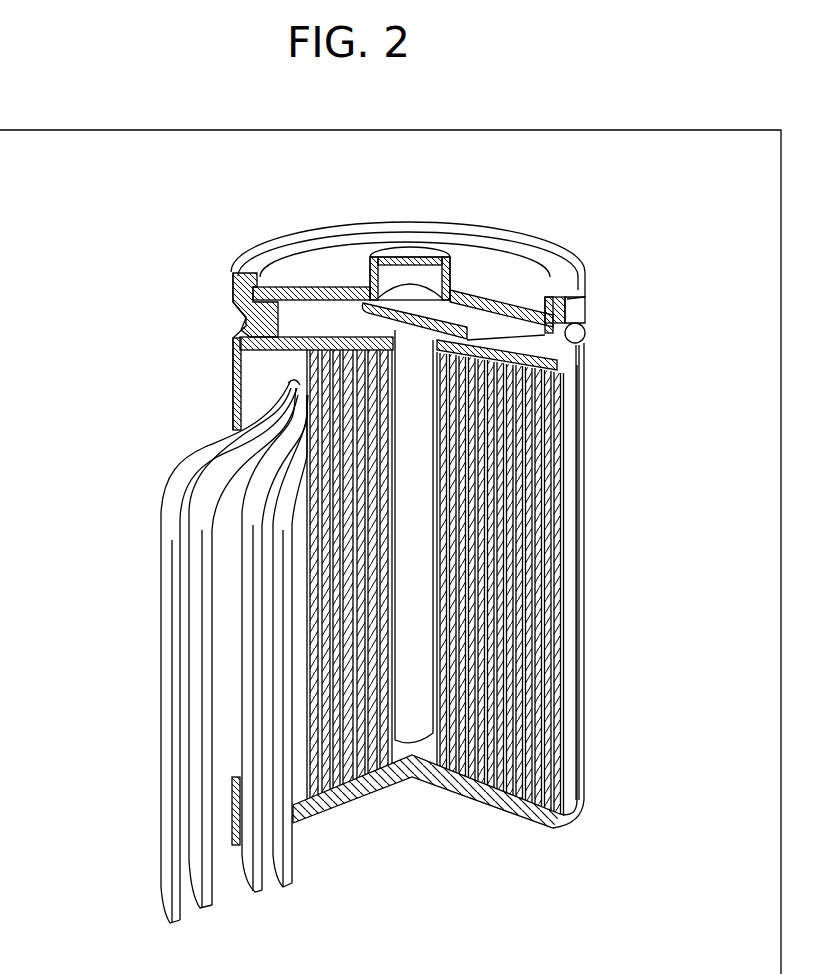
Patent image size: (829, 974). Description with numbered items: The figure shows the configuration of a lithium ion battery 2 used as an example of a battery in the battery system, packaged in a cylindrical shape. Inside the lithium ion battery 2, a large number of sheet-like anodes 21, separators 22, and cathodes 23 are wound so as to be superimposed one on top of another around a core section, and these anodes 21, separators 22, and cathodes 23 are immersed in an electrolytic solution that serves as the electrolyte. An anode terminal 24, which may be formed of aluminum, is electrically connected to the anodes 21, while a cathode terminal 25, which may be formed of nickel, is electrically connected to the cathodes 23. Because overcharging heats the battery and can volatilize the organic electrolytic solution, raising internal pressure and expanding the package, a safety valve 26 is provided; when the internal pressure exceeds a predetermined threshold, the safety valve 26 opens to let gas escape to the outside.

The lithium ion battery 2 is at (499, 223).
The anodes 21 is at (283, 762).
The separators 22 is at (258, 675).
The cathodes 23 is at (205, 600).
The anode terminal 24 is at (405, 249).
The cathode terminal 25 is at (363, 785).
The safety valve 26 is at (408, 290).